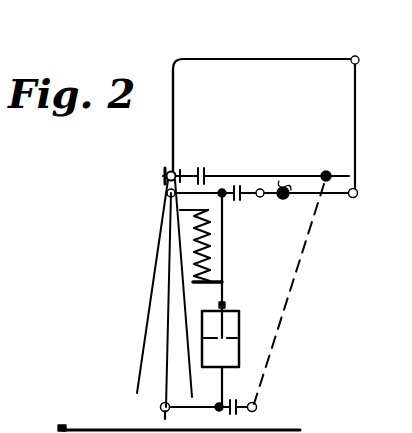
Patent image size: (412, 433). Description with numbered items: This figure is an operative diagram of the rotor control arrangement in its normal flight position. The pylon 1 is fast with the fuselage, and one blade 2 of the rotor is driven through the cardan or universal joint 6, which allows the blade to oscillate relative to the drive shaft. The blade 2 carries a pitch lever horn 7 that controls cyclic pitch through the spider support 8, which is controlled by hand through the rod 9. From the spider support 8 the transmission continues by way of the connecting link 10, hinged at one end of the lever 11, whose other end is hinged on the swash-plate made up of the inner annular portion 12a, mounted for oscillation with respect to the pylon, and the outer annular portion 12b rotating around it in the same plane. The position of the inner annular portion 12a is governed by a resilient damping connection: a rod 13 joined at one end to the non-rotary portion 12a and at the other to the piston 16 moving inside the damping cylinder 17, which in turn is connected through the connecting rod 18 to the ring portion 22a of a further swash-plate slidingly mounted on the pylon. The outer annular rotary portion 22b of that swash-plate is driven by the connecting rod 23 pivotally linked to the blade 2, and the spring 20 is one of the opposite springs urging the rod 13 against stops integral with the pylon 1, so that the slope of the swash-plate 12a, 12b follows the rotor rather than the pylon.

The pylon 1 is at (146, 320).
The blade 2 is at (337, 174).
The cardan or universal joint 6 is at (195, 172).
The pitch lever horn 7 is at (291, 197).
The spider support 8 is at (264, 116).
The rod 9 is at (180, 121).
The connecting link 10 is at (363, 124).
The lever 11 is at (337, 196).
The inner annular portion 12a is at (206, 190).
The outer annular portion 12b is at (253, 189).
The rod 13 is at (224, 233).
The piston 16 is at (220, 337).
The damping cylinder 17 is at (240, 326).
The connecting rod 18 is at (222, 384).
The spring 20 is at (213, 270).
The ring portion 22a is at (186, 406).
The outer annular rotary portion 22b is at (253, 413).
The connecting rod 23 is at (289, 304).